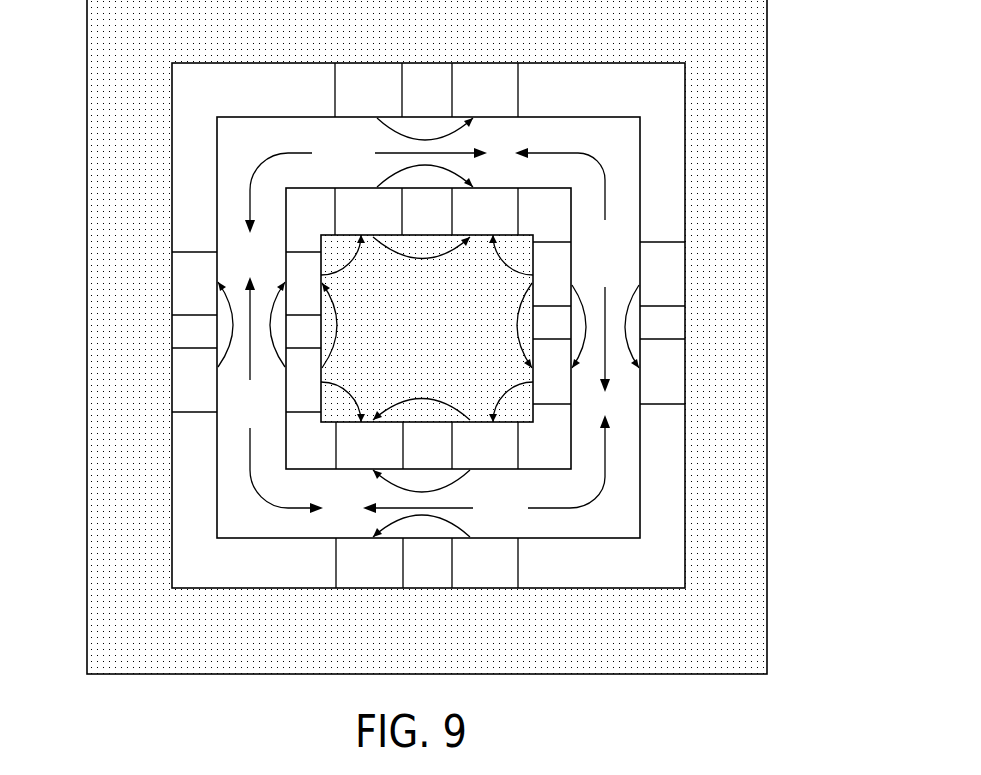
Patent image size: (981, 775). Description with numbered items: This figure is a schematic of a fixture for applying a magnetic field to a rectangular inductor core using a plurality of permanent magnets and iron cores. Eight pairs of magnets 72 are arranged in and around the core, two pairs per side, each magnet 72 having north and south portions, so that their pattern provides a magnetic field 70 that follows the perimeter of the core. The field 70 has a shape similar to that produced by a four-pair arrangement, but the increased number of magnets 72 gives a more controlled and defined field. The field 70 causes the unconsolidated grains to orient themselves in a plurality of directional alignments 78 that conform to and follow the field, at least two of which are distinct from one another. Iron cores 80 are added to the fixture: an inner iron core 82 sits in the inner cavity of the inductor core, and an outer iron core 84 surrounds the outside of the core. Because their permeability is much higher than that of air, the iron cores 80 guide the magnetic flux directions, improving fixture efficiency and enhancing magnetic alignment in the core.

The magnetic field 70 is at (288, 150).
The magnets 72 is at (354, 80).
The directional alignments 78 is at (250, 197).
The iron cores 80 is at (421, 337).
The iron core 82 is at (320, 405).
The iron core 84 is at (723, 55).